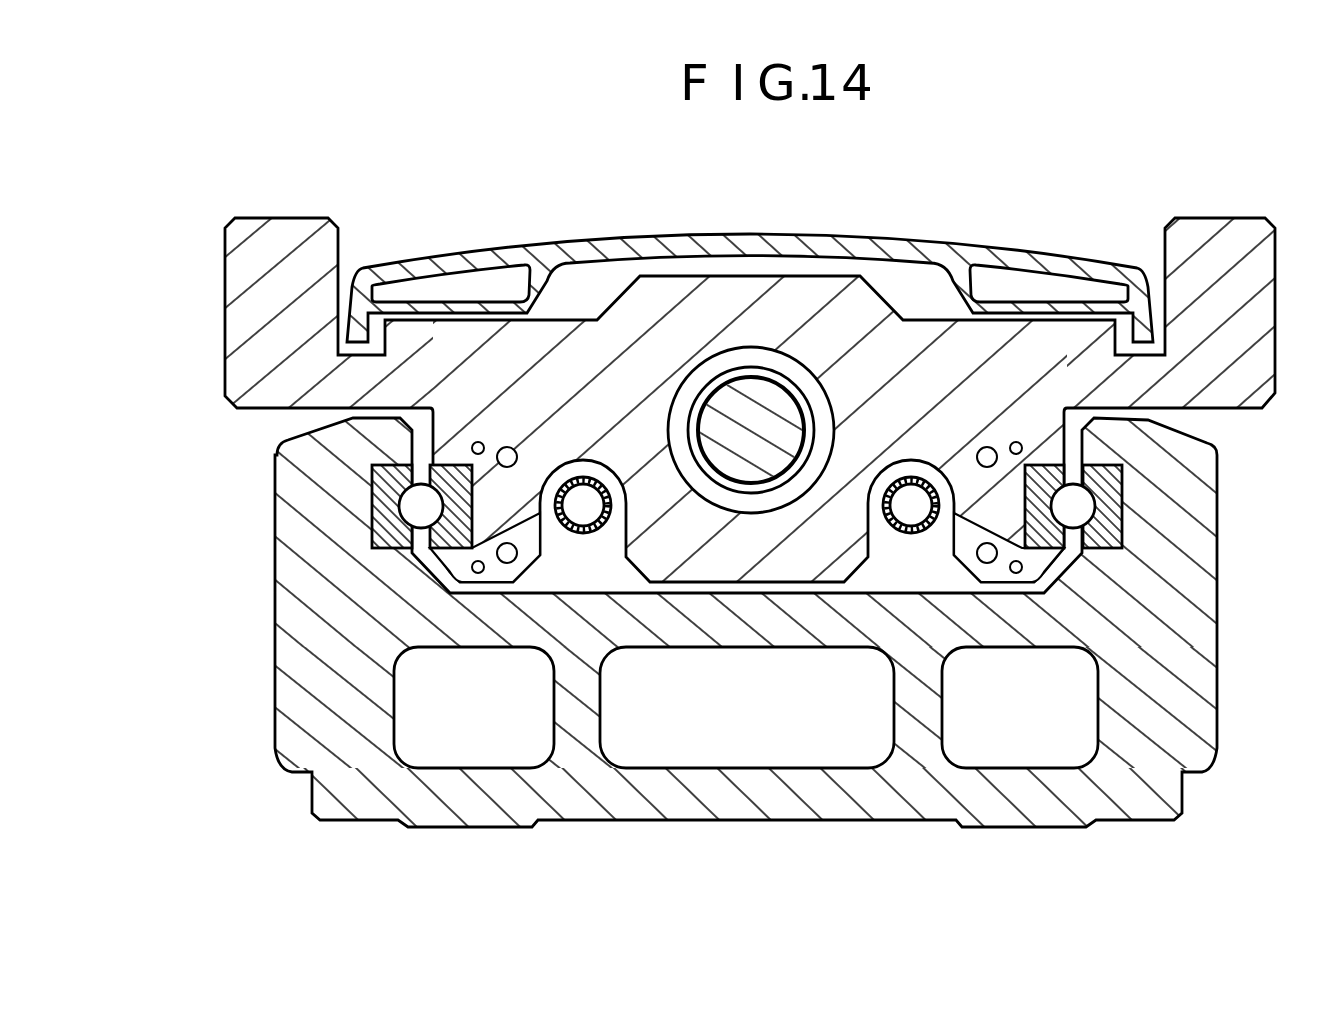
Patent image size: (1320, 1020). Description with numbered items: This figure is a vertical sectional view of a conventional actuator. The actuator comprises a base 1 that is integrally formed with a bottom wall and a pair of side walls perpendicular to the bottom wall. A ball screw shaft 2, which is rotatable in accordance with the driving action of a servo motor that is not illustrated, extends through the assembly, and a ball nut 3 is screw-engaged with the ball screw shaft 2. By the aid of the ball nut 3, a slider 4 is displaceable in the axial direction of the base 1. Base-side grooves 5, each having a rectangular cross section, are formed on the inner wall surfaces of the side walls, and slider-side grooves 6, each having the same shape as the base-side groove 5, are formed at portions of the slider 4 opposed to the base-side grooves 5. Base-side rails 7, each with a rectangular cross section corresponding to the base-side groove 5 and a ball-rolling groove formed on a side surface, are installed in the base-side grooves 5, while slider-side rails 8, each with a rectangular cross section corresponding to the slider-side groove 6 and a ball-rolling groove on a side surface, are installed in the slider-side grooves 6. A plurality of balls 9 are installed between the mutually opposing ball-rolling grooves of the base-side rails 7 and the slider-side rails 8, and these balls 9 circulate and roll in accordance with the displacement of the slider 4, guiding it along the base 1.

The base 1 is at (762, 832).
The ball screw shaft 2 is at (757, 390).
The ball nut 3 is at (807, 380).
The slider 4 is at (746, 290).
The base-side groove 5 is at (372, 497).
The slider-side groove 6 is at (433, 463).
The base-side rail 7 is at (385, 528).
The slider-side rail 8 is at (548, 560).
The balls 9 is at (423, 520).